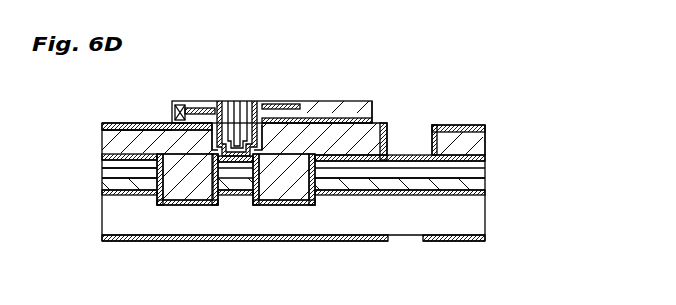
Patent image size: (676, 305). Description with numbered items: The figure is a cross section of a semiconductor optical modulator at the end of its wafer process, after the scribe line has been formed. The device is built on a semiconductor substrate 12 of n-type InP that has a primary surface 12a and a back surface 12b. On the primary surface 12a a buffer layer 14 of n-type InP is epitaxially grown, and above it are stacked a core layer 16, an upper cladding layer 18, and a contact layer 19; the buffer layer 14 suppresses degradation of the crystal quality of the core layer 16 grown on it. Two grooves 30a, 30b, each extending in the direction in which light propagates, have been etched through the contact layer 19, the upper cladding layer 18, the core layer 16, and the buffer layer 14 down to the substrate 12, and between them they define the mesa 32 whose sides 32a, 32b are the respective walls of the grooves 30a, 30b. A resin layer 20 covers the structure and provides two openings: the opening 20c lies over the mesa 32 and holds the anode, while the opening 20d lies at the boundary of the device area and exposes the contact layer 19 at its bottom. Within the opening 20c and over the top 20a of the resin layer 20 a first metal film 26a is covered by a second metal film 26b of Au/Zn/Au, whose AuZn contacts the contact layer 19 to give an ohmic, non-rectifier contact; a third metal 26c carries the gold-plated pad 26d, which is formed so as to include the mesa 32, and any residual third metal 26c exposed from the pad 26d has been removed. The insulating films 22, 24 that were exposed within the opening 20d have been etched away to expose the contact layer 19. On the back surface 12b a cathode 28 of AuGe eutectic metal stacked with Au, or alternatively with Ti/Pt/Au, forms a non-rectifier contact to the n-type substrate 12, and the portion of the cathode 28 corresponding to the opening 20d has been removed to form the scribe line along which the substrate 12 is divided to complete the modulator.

The semiconductor substrate 12 is at (483, 216).
The primary surface 12a is at (484, 190).
The back surface 12b is at (478, 245).
The buffer layer 14 is at (395, 195).
The core layer 16 is at (425, 183).
The upper cladding layer 18 is at (484, 173).
The contact layer 19 is at (484, 162).
The resin layer 20 is at (108, 145).
The top of the resin layer 20a is at (116, 125).
The opening 20c is at (229, 110).
The opening 20d is at (385, 140).
The insulating film 22 is at (103, 158).
The insulating film 24 is at (101, 124).
The first metal film 26a is at (184, 110).
The second metal film 26b is at (193, 110).
The third metal 26c is at (327, 112).
The pad 26d is at (370, 105).
The cathode 28 is at (352, 241).
The groove 30a is at (168, 205).
The groove 30b is at (302, 205).
The mesa 32 is at (237, 147).
The side of the mesa 32a is at (208, 200).
The side of the mesa 32b is at (258, 200).